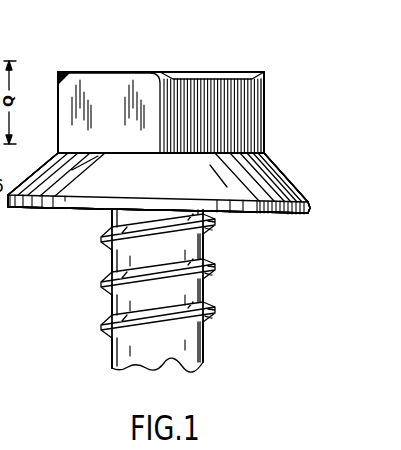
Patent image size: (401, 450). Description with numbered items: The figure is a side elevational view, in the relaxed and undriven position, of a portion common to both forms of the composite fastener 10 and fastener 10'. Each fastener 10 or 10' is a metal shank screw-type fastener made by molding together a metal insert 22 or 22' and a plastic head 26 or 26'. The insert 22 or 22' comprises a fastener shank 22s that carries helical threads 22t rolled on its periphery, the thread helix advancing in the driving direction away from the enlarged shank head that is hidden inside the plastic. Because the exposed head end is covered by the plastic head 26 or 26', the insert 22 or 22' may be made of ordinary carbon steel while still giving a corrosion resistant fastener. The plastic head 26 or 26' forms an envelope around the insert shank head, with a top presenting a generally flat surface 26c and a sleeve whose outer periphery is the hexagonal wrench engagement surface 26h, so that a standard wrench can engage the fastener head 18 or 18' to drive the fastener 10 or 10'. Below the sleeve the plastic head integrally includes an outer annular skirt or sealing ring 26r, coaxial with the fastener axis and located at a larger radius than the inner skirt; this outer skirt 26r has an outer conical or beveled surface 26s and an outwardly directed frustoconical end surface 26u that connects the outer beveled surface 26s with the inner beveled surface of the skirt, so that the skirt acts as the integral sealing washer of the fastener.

The fastener 10 is at (161, 207).
The fastener 10' is at (173, 207).
The fastener head 18 is at (196, 112).
The fastener head 18' is at (208, 112).
The plastic head 26 is at (171, 142).
The plastic head 26' is at (183, 142).
The flat surface 26c is at (192, 72).
The wrench engagement surface 26h is at (247, 148).
The outer skirt 26r is at (275, 188).
The outer conical surface 26s is at (306, 203).
The end surface 26u is at (308, 211).
The metal insert 22 is at (206, 289).
The metal insert 22' is at (231, 289).
The fastener shank 22s is at (217, 291).
The helical threads 22t is at (215, 276).